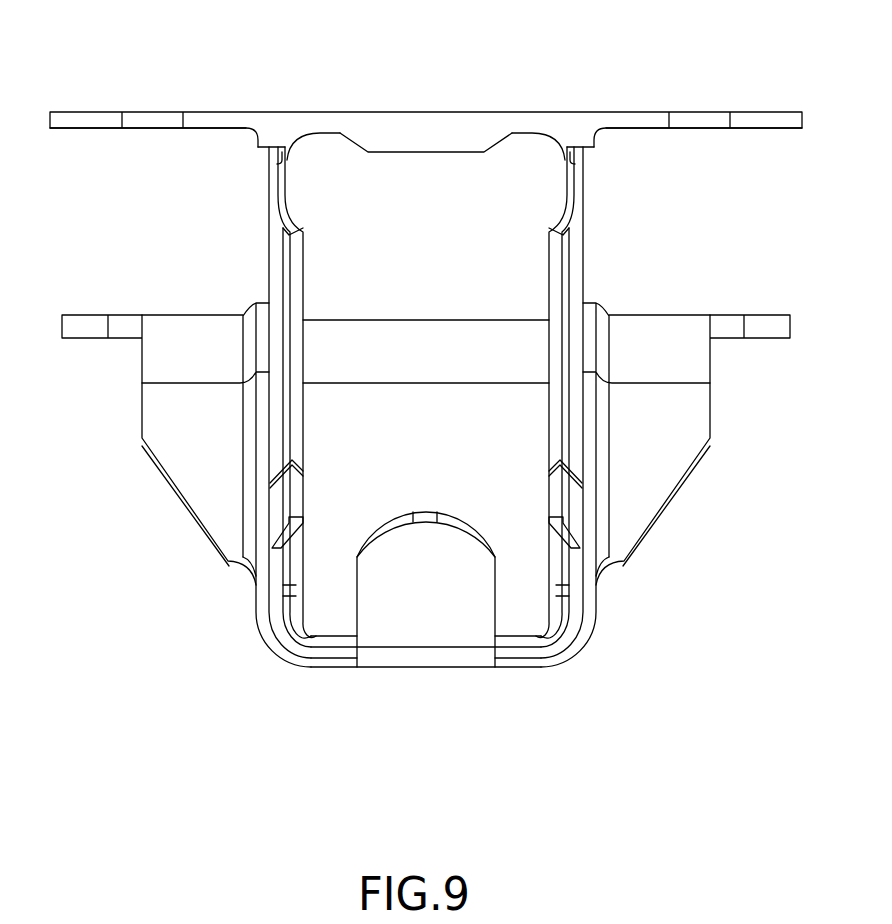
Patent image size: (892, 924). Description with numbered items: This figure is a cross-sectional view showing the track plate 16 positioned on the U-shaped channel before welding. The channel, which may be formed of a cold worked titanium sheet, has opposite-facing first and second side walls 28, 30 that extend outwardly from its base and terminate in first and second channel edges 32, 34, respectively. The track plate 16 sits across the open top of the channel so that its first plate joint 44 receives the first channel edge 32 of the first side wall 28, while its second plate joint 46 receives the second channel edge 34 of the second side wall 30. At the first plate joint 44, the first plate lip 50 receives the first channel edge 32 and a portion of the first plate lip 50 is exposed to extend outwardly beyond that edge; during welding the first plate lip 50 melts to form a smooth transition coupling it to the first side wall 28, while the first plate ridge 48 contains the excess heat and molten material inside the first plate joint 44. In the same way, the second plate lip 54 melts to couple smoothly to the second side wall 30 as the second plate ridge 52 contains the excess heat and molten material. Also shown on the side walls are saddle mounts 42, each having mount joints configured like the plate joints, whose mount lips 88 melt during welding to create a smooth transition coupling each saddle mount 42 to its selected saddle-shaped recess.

The track plate 16 is at (431, 128).
The first side wall 28 is at (586, 253).
The second side wall 30 is at (268, 250).
The first channel edge 32 is at (578, 155).
The second channel edge 34 is at (272, 165).
The saddle mount 42 is at (652, 487).
The first plate joint 44 is at (562, 141).
The second plate joint 46 is at (290, 141).
The first plate ridge 48 is at (564, 160).
The first plate lip 50 is at (592, 147).
The second plate ridge 52 is at (288, 160).
The second plate lip 54 is at (260, 143).
The mount lip 88 is at (250, 302).